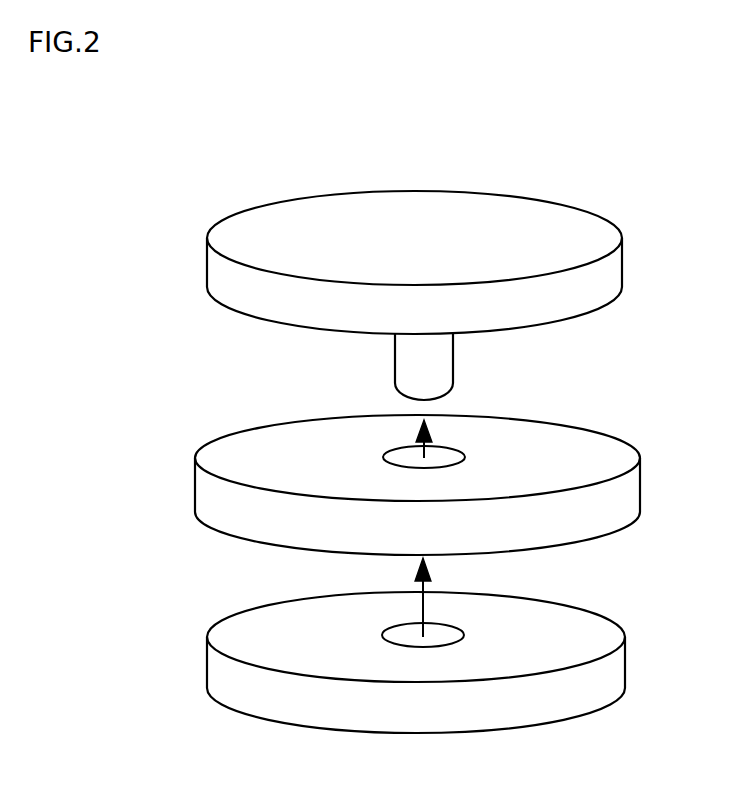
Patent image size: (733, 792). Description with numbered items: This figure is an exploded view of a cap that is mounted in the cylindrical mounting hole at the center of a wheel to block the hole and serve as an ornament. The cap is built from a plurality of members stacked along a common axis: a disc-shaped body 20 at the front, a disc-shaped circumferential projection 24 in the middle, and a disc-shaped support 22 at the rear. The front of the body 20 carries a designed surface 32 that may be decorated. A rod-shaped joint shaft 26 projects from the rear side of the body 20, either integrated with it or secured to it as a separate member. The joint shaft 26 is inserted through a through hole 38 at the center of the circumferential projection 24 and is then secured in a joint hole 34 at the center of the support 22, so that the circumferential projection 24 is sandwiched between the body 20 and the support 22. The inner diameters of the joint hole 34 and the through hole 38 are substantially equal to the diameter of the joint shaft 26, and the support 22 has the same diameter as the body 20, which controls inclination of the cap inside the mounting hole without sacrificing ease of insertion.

The body 20 is at (446, 224).
The designed surface 32 is at (478, 208).
The joint shaft 26 is at (435, 357).
The circumferential projection 24 is at (453, 475).
The through hole 38 is at (442, 452).
The support 22 is at (446, 657).
The joint hole 34 is at (463, 633).